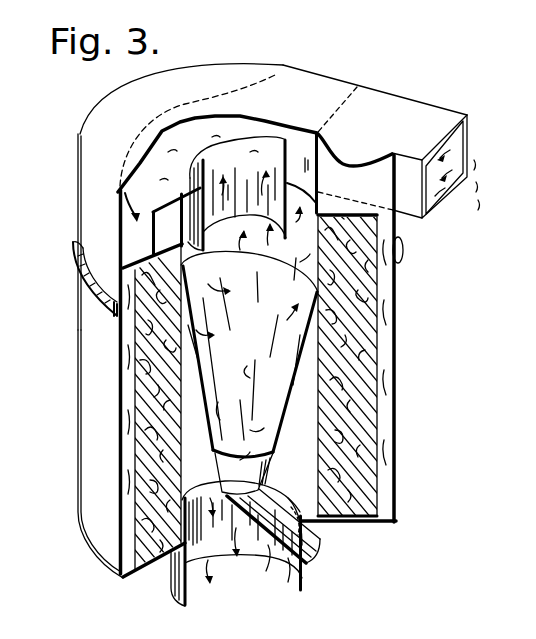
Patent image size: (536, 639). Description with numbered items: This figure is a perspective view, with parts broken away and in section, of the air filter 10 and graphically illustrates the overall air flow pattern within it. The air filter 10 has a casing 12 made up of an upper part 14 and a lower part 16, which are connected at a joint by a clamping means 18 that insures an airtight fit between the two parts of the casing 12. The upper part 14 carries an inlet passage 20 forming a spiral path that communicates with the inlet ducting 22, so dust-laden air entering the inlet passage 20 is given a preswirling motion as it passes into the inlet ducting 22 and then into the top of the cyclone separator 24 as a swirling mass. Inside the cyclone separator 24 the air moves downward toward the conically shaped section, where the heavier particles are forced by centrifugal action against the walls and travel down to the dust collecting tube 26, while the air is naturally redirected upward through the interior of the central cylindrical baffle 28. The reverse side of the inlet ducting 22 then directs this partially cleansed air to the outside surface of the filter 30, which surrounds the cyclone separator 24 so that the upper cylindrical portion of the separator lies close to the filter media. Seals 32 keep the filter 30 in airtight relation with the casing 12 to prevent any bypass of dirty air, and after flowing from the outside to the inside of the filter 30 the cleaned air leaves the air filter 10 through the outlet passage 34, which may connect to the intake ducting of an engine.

The air filter 10 is at (296, 62).
The casing 12 is at (397, 328).
The upper part 14 is at (87, 200).
The lower part 16 is at (87, 424).
The clamping means 18 is at (92, 297).
The inlet passage 20 is at (446, 150).
The inlet ducting 22 is at (172, 226).
The cyclone separator 24 is at (260, 341).
The dust collecting tube 26 is at (318, 548).
The central cylindrical baffle 28 is at (240, 182).
The filter 30 is at (357, 394).
The seals 32 is at (360, 218).
The outlet passage 34 is at (287, 560).